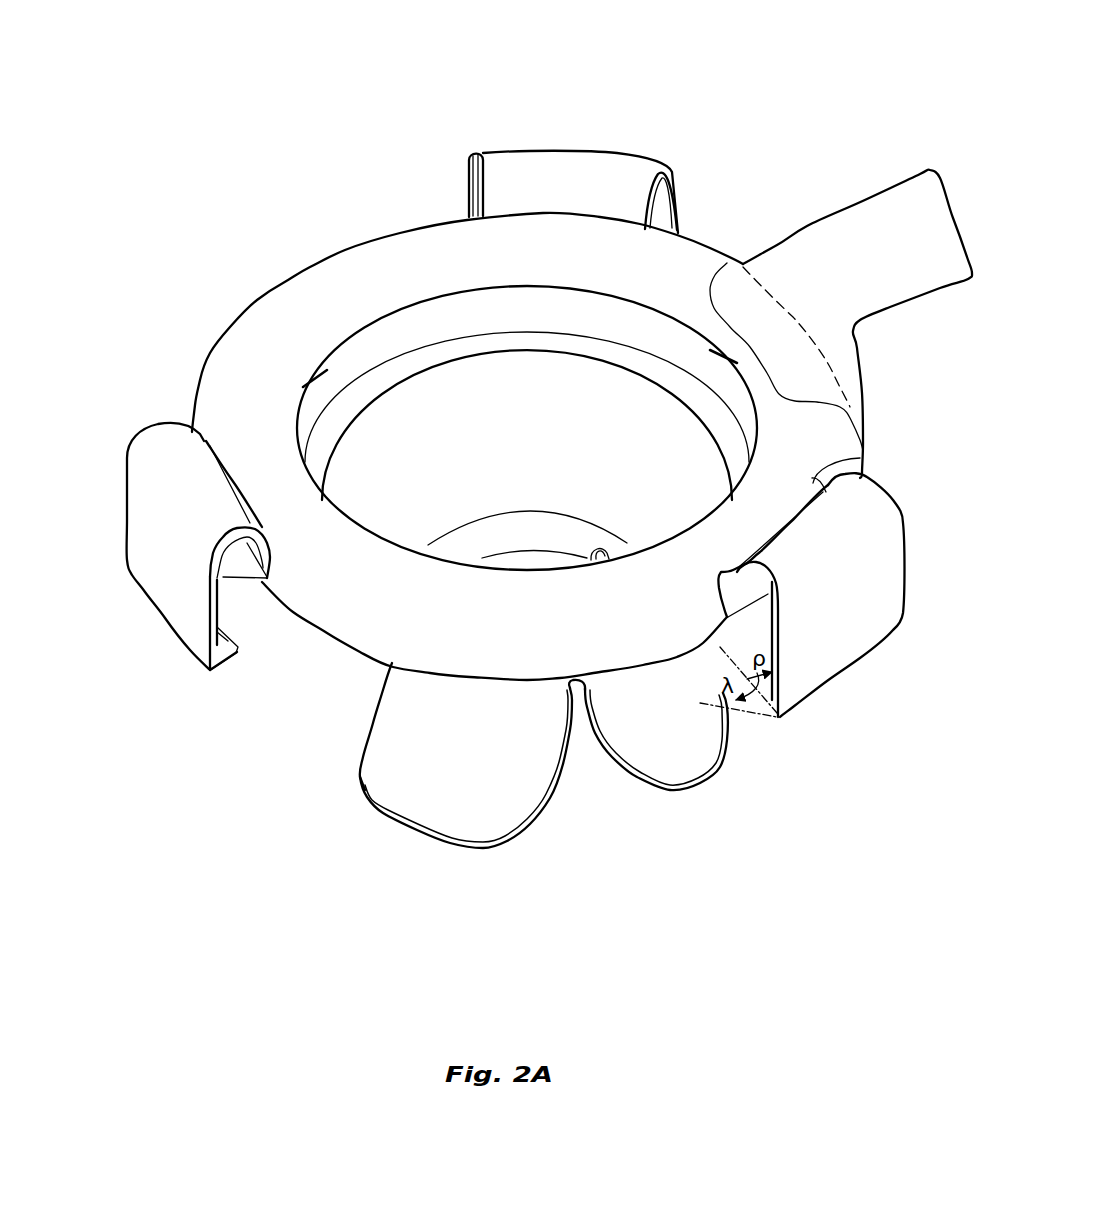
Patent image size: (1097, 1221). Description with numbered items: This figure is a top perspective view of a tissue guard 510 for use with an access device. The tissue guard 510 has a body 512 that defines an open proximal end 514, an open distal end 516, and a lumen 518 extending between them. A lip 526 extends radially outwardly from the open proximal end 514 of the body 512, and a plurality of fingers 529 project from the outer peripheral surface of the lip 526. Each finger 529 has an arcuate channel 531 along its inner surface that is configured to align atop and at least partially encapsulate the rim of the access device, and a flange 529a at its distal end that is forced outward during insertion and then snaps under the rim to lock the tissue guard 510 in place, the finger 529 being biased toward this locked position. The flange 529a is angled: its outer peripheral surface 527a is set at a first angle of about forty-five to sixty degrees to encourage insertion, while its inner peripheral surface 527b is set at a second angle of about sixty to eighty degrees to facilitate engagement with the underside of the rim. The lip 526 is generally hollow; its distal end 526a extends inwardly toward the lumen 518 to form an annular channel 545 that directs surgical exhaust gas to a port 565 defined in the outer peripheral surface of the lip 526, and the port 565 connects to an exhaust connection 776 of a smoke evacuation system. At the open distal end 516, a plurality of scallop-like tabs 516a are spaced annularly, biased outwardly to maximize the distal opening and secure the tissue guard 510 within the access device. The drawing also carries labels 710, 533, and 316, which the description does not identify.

The tissue guard 510 is at (572, 127).
The open proximal end 514 is at (273, 287).
The lumen 518 is at (553, 392).
The lip 526 is at (462, 237).
The distal end of lip 526a is at (443, 353).
The annular channel 545 is at (377, 263).
The fingers 529 is at (634, 154).
The arcuate channel 531 is at (245, 545).
The flange 529a is at (213, 677).
The outer peripheral surface of flange 527a is at (235, 655).
The inner peripheral surface of flange 527b is at (232, 637).
The lateral wing 710 is at (893, 207).
The port 565 is at (773, 309).
The exhaust connection 776 is at (807, 227).
The slot 533 is at (814, 481).
The body 512 is at (633, 678).
The open distal end 516 is at (470, 812).
The scallop-like tabs 516a is at (510, 798).
The tab outer edge 316 is at (390, 786).